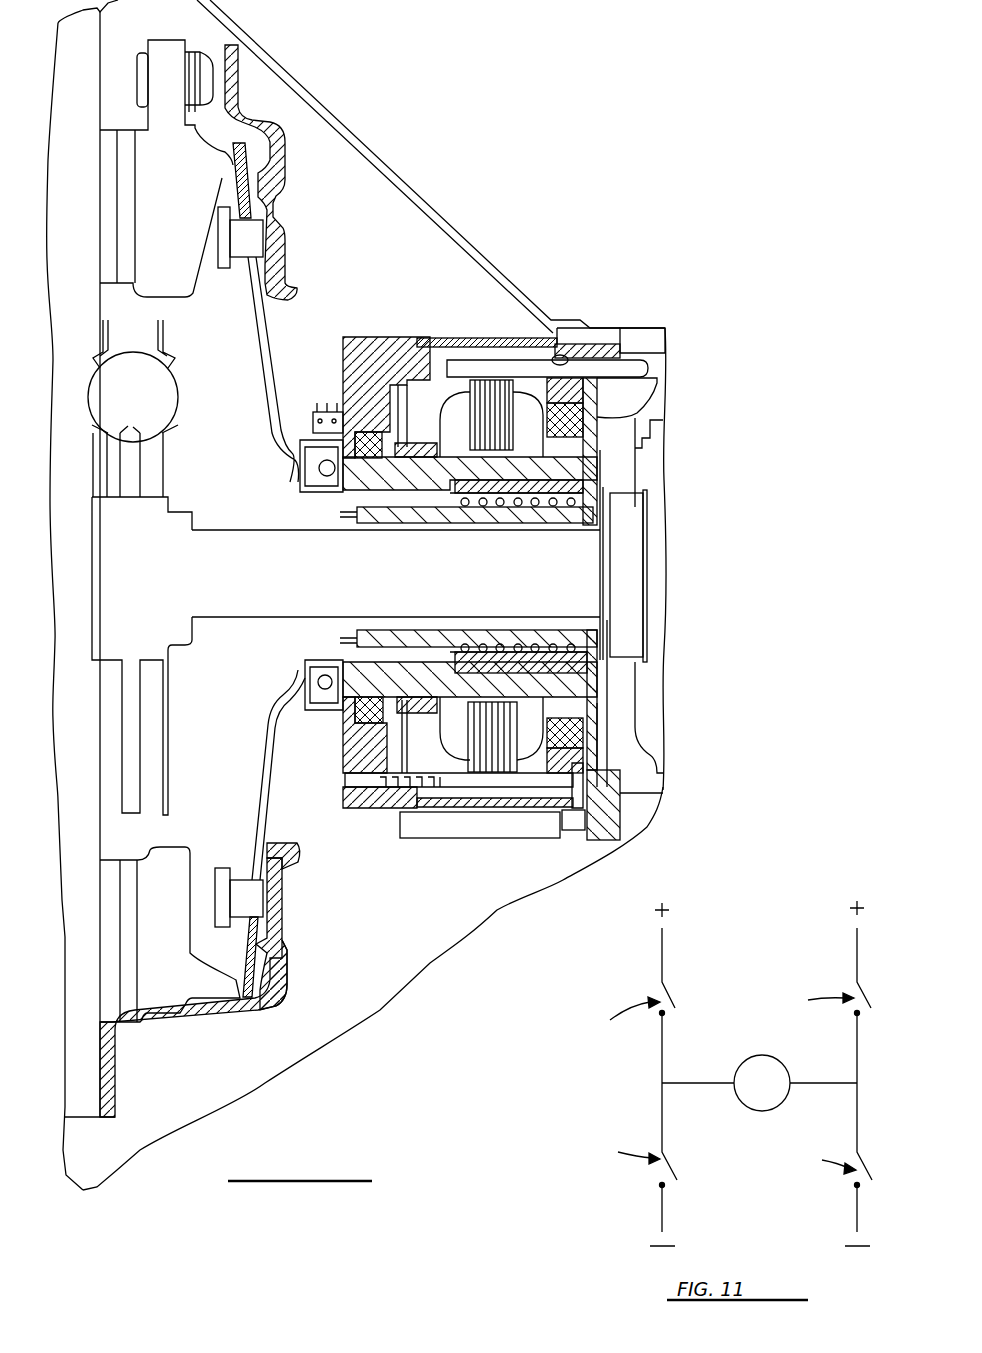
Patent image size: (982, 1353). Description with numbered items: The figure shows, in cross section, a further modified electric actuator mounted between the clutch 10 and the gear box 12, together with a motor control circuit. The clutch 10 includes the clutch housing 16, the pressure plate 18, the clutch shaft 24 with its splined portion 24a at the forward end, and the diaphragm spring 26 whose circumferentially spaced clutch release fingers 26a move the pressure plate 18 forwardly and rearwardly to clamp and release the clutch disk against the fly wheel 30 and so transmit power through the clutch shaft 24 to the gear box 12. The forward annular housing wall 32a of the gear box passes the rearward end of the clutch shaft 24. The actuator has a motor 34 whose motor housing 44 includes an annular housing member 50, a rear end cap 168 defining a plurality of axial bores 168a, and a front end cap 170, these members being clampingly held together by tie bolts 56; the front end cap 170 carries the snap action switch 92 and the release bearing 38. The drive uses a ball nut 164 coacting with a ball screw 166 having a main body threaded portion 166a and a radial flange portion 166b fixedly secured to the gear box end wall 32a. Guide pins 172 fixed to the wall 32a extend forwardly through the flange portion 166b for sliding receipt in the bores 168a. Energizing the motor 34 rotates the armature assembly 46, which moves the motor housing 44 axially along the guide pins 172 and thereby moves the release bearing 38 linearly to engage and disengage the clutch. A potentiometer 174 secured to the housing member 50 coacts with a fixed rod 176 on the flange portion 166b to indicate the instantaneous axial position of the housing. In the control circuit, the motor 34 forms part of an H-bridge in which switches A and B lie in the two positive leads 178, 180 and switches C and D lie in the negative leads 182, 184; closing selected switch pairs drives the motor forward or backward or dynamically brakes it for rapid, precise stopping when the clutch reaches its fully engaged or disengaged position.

In FIG. 10, the clutch 10 is at (78, 518).
In FIG. 10, the gear box 12 is at (668, 580).
In FIG. 10, the clutch housing 16 is at (347, 125).
In FIG. 10, the pressure plate 18 is at (172, 45).
In FIG. 10, the clutch shaft 24 is at (318, 580).
In FIG. 10, the splined portion 24a is at (160, 588).
In FIG. 10, the diaphragm spring 26 is at (227, 190).
In FIG. 10, the clutch release fingers 26a is at (262, 370).
In FIG. 10, the fly wheel 30 is at (72, 777).
In FIG. 10, the forward annular housing wall 32a is at (627, 715).
In FIG. 10, the motor 34 is at (356, 262).
In FIG. 11, the motor 34 is at (765, 1055).
In FIG. 10, the release bearing 38 is at (290, 496).
In FIG. 10, the motor housing 44 is at (418, 300).
In FIG. 10, the armature assembly 46 is at (453, 420).
In FIG. 10, the annular housing member 50 is at (478, 338).
In FIG. 10, the tie bolts 56 is at (527, 782).
In FIG. 10, the snap action switch 92 is at (312, 425).
In FIG. 10, the ball nut 164 is at (600, 487).
In FIG. 10, the ball screw 166 is at (357, 514).
In FIG. 10, the main body threaded portion 166a is at (467, 527).
In FIG. 10, the radial flange portion 166b is at (597, 417).
In FIG. 10, the rear end cap 168 is at (565, 340).
In FIG. 10, the axial bores 168a is at (567, 352).
In FIG. 10, the front end cap 170 is at (375, 338).
In FIG. 10, the guide pins 172 is at (505, 362).
In FIG. 10, the potentiometer 174 is at (440, 835).
In FIG. 10, the fixed rod 176 is at (570, 838).
In FIG. 11, the positive lead 178 is at (660, 957).
In FIG. 11, the positive lead 180 is at (860, 952).
In FIG. 11, the negative lead 182 is at (660, 1208).
In FIG. 11, the negative lead 184 is at (857, 1218).